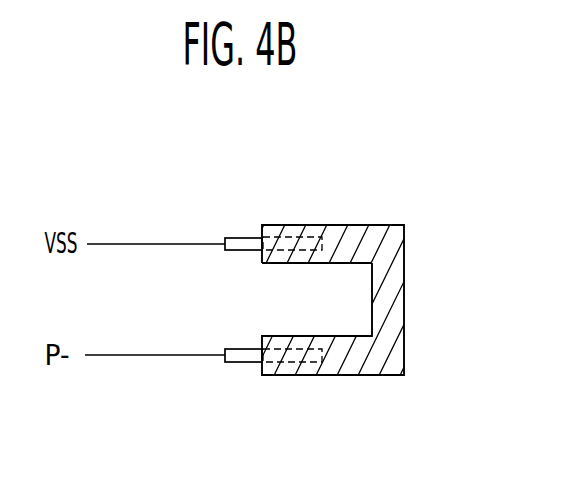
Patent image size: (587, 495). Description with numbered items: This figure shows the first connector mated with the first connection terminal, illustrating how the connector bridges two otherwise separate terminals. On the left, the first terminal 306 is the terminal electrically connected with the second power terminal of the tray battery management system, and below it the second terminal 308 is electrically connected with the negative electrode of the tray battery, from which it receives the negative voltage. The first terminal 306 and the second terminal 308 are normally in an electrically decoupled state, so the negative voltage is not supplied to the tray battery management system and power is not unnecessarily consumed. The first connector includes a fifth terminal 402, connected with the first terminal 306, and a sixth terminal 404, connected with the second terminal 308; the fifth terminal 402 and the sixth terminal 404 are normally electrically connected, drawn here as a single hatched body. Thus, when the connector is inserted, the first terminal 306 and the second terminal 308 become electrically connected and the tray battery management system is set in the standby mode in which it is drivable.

The first terminal 306 is at (234, 238).
The second terminal 308 is at (234, 363).
The fifth terminal 402 is at (333, 225).
The sixth terminal 404 is at (330, 375).